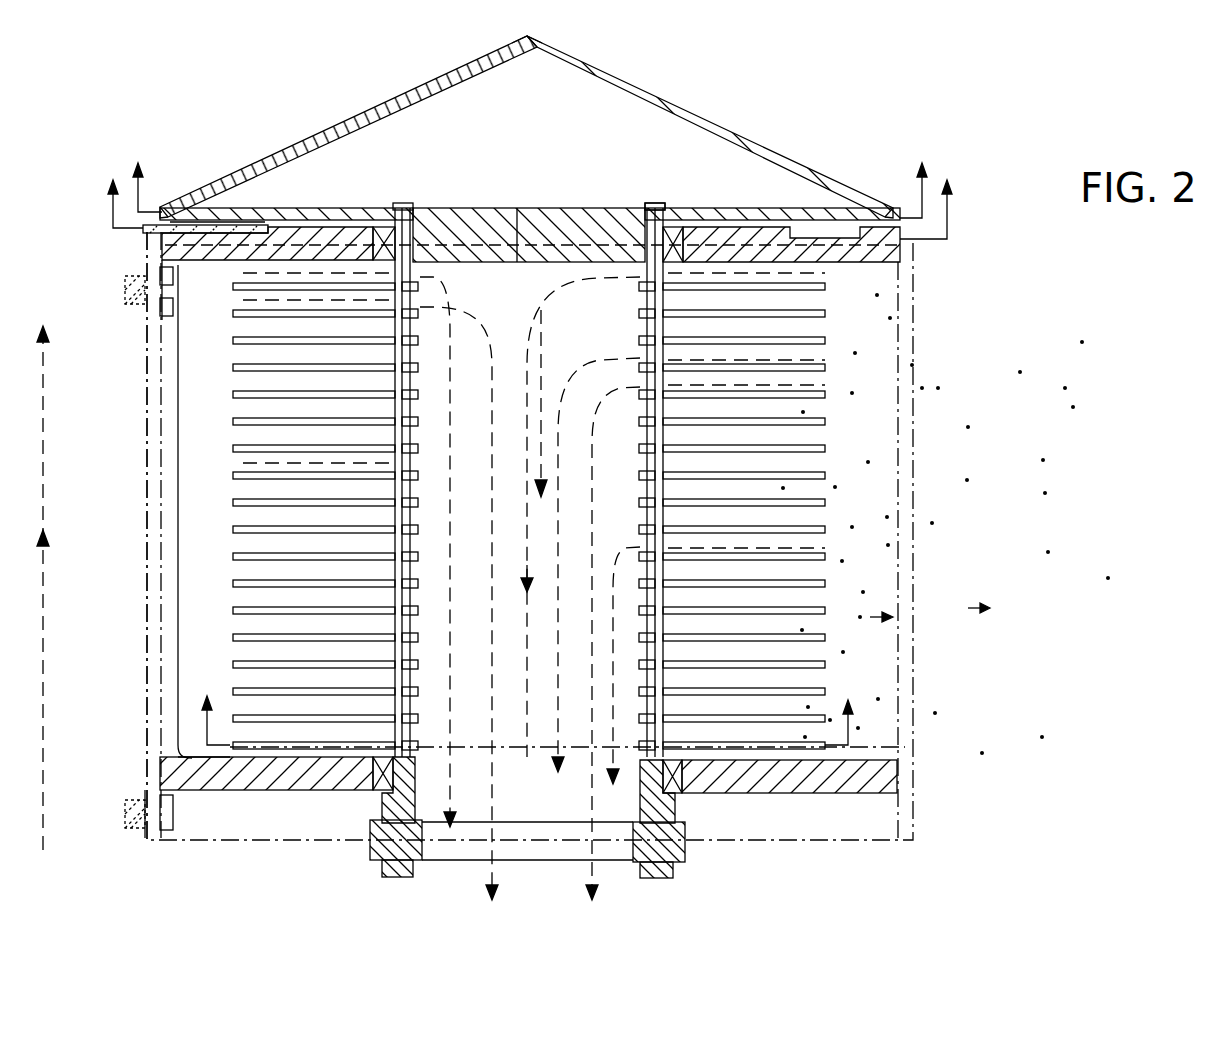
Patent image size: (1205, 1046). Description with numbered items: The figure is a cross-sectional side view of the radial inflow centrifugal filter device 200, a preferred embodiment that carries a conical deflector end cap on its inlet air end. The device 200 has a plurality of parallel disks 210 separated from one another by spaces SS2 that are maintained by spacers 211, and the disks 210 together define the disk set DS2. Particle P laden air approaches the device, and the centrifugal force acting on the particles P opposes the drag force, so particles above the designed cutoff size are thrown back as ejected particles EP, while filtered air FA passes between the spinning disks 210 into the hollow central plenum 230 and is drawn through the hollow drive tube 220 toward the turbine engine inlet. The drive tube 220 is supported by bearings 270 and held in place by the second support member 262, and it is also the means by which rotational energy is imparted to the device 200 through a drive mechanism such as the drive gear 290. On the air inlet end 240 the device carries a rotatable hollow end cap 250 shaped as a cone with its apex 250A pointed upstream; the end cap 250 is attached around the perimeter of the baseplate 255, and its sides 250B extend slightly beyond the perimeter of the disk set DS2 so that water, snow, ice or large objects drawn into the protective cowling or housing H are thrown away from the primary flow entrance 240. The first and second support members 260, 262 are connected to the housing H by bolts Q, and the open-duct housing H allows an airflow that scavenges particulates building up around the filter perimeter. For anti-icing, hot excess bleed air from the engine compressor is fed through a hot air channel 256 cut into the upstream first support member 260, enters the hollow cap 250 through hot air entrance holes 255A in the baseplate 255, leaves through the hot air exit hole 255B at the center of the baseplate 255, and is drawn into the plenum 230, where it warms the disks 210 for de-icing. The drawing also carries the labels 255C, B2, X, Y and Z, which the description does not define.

The filter device 200 is at (823, 122).
The disks 210 is at (420, 420).
The spacers 211 is at (640, 307).
The hollow drive tube 220 is at (382, 807).
The central plenum 230 is at (509, 558).
The air inlet end 240 is at (813, 212).
The hollow end cap 250 is at (350, 118).
The apex 250A is at (512, 33).
The sides of end cap 250B is at (162, 206).
The baseplate 255 is at (707, 210).
The hot air entrance holes 255A is at (243, 210).
The hot air exit hole 255B is at (528, 208).
The gas distribution channel 255C is at (530, 581).
The hot air channel 256 is at (198, 228).
The first support member 260 is at (262, 260).
The second support member 262 is at (207, 757).
The bearings 270 is at (677, 795).
The drive gear 290 is at (370, 855).
The bolt B2 is at (657, 205).
The spaces SS2 is at (529, 511).
The disk set DS2 is at (178, 550).
The ejected particles EP is at (962, 612).
The filtered air FA is at (483, 882).
The housing H is at (147, 378).
The particles P is at (922, 470).
The bolts Q is at (178, 288).
The X axis X is at (530, 175).
The Y axis Y is at (530, 196).
The Z axis Z is at (527, 707).